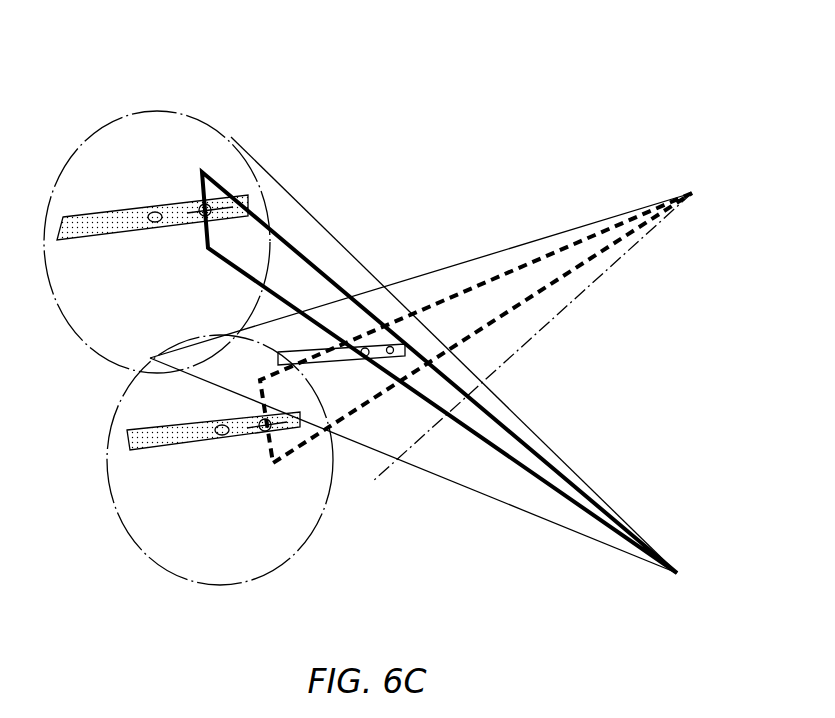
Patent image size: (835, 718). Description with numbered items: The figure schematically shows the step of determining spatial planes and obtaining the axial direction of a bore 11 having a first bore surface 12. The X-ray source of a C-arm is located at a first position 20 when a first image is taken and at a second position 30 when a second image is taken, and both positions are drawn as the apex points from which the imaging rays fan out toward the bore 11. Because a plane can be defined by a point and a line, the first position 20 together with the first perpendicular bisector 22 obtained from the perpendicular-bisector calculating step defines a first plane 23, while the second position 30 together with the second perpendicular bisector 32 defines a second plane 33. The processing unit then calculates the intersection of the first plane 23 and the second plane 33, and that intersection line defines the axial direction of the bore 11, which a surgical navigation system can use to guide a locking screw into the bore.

The bore 11 is at (374, 360).
The first bore surface 12 is at (388, 357).
The first position 20 is at (677, 575).
The first perpendicular bisector 22 is at (197, 178).
The first plane 23 is at (262, 200).
The second position 30 is at (692, 192).
The second perpendicular bisector 32 is at (268, 452).
The second plane 33 is at (287, 462).